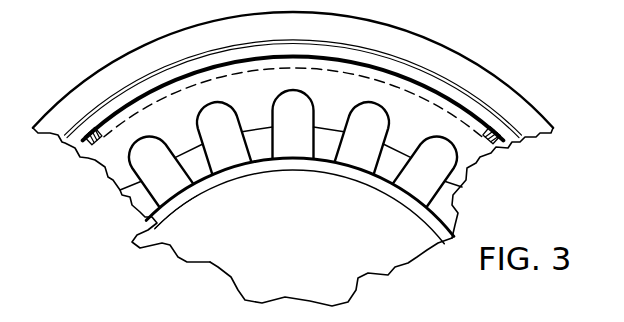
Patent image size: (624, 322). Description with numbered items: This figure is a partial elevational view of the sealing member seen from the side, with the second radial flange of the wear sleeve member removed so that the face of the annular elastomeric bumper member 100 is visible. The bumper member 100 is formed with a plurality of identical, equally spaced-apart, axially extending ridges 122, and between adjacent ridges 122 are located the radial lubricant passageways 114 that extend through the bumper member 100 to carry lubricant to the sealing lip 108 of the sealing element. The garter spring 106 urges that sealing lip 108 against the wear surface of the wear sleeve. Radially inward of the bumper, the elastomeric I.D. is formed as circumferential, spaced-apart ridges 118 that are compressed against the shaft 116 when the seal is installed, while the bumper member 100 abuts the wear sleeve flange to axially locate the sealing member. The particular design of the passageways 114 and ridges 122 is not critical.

The annular elastomeric bumper member 100 is at (291, 155).
The garter spring 106 is at (507, 147).
The sealing lip 108 is at (436, 42).
The radial lubricant passageways 114 is at (331, 127).
The shaft 116 is at (307, 245).
The circumferential spaced-apart ridges 118 is at (143, 230).
The axially extending ridges 122 is at (288, 96).